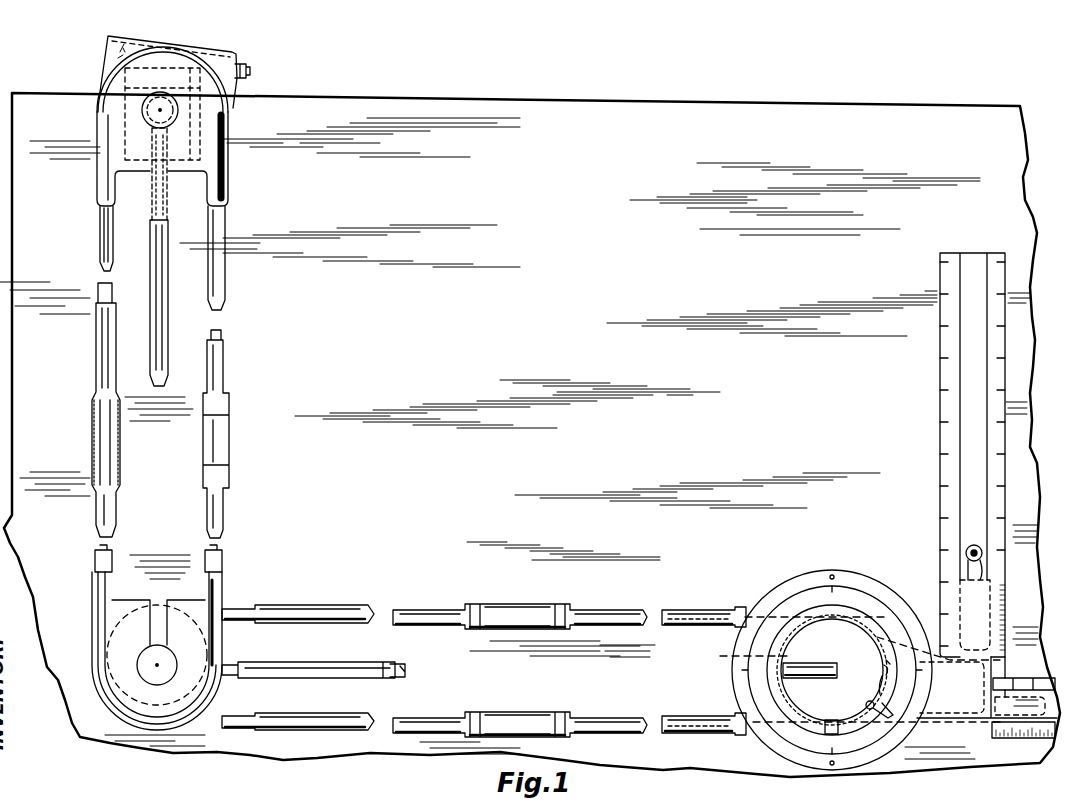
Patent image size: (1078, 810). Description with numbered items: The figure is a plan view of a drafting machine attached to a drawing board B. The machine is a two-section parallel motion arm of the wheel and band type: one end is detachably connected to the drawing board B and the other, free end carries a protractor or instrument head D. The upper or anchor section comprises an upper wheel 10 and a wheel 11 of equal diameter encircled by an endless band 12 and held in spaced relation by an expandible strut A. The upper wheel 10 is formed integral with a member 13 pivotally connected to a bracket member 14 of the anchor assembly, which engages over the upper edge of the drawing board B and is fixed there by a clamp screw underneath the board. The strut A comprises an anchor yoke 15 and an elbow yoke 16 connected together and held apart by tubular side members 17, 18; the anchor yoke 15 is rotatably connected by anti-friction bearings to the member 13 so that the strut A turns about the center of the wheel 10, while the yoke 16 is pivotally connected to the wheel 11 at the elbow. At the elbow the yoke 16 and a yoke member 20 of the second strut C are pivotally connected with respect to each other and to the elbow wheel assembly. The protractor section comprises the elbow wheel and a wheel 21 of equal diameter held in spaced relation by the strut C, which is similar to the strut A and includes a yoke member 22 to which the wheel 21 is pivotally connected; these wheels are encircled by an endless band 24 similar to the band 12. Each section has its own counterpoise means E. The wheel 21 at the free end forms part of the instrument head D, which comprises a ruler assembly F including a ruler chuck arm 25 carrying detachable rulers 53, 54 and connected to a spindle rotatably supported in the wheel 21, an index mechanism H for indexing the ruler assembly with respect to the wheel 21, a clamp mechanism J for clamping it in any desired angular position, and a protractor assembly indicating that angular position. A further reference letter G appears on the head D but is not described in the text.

The upper wheel 10 is at (112, 106).
The wheel 11 is at (122, 640).
The endless band 12 is at (98, 341).
The member 13 is at (112, 54).
The bracket member 14 is at (218, 54).
The anchor yoke 15 is at (101, 188).
The yoke 16 is at (96, 590).
The tubular side member 17 is at (102, 236).
The tubular side member 18 is at (220, 368).
The yoke member 20 is at (250, 605).
The wheel 21 is at (740, 653).
The yoke member 22 is at (748, 598).
The endless band 24 is at (386, 718).
The ruler chuck arm 25 is at (982, 722).
The ruler 53 is at (940, 414).
The ruler 54 is at (1040, 664).
The expandible strut A is at (227, 234).
The drawing board B is at (665, 85).
The strut C is at (446, 598).
The instrument head D is at (893, 592).
The counterpoise means E is at (168, 303).
The ruler assembly F is at (934, 496).
The slot G is at (824, 663).
The index mechanism H is at (880, 672).
The clamp mechanism J is at (891, 723).